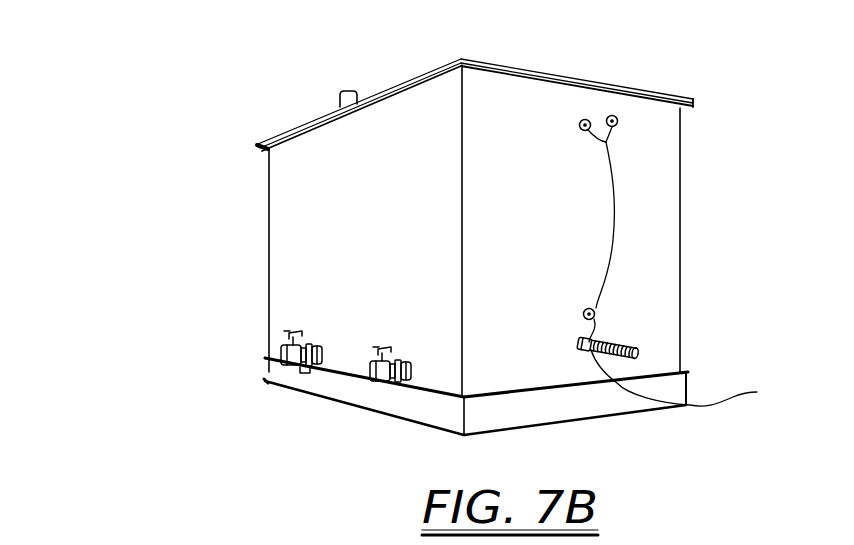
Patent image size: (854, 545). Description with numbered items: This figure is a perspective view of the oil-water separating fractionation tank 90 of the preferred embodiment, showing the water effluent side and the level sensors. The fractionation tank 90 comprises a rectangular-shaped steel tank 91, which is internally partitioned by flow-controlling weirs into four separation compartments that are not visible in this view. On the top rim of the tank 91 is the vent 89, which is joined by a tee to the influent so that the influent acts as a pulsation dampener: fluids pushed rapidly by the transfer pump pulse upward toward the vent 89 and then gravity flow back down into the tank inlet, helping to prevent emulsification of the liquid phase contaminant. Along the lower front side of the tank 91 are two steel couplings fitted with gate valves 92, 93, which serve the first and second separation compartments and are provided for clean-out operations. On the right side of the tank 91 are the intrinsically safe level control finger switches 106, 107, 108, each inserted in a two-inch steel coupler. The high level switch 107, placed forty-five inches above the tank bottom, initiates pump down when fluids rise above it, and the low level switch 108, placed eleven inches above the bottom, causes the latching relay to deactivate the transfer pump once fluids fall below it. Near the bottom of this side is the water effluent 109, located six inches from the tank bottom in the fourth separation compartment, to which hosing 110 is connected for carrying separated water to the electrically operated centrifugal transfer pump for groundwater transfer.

The oil-water separating fractionation tank 90 is at (148, 120).
The rectangular-shaped steel tank 91 is at (362, 248).
The vent 89 is at (340, 100).
The gate valve 92 is at (288, 368).
The gate valve 93 is at (388, 381).
The level control finger switch 106 is at (618, 119).
The high level switch 107 is at (583, 119).
The low level switch 108 is at (598, 310).
The water effluent 109 is at (578, 343).
The hosing 110 is at (637, 342).